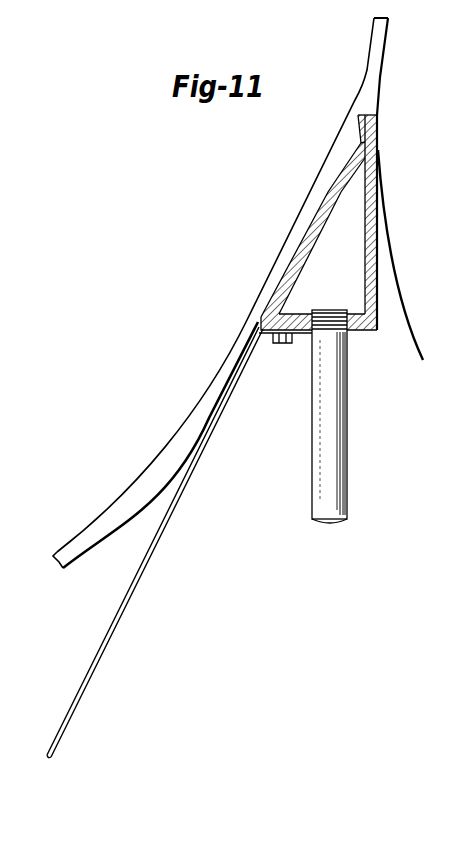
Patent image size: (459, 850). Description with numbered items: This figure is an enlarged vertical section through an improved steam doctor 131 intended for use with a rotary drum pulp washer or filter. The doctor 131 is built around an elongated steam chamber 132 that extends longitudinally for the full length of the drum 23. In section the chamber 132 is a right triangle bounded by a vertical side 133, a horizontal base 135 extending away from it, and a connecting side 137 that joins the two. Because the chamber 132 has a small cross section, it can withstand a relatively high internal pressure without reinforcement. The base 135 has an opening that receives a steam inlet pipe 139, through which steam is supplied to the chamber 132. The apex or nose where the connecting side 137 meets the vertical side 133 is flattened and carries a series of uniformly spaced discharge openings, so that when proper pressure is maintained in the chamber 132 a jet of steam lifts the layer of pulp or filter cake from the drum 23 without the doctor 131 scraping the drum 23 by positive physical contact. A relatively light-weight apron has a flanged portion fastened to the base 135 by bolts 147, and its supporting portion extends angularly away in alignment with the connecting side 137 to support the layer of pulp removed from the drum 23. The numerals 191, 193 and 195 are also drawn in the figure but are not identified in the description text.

The drum 23 is at (412, 352).
The doctor 131 is at (165, 378).
The steam chamber 132 is at (350, 288).
The vertical side 133 is at (371, 244).
The horizontal base 135 is at (307, 334).
The connecting side 137 is at (302, 230).
The steam inlet pipe 139 is at (320, 410).
The bolts 147 is at (271, 338).
The top end of bracket 191 is at (377, 128).
The junction web 193 is at (361, 128).
The rod 195 is at (138, 575).